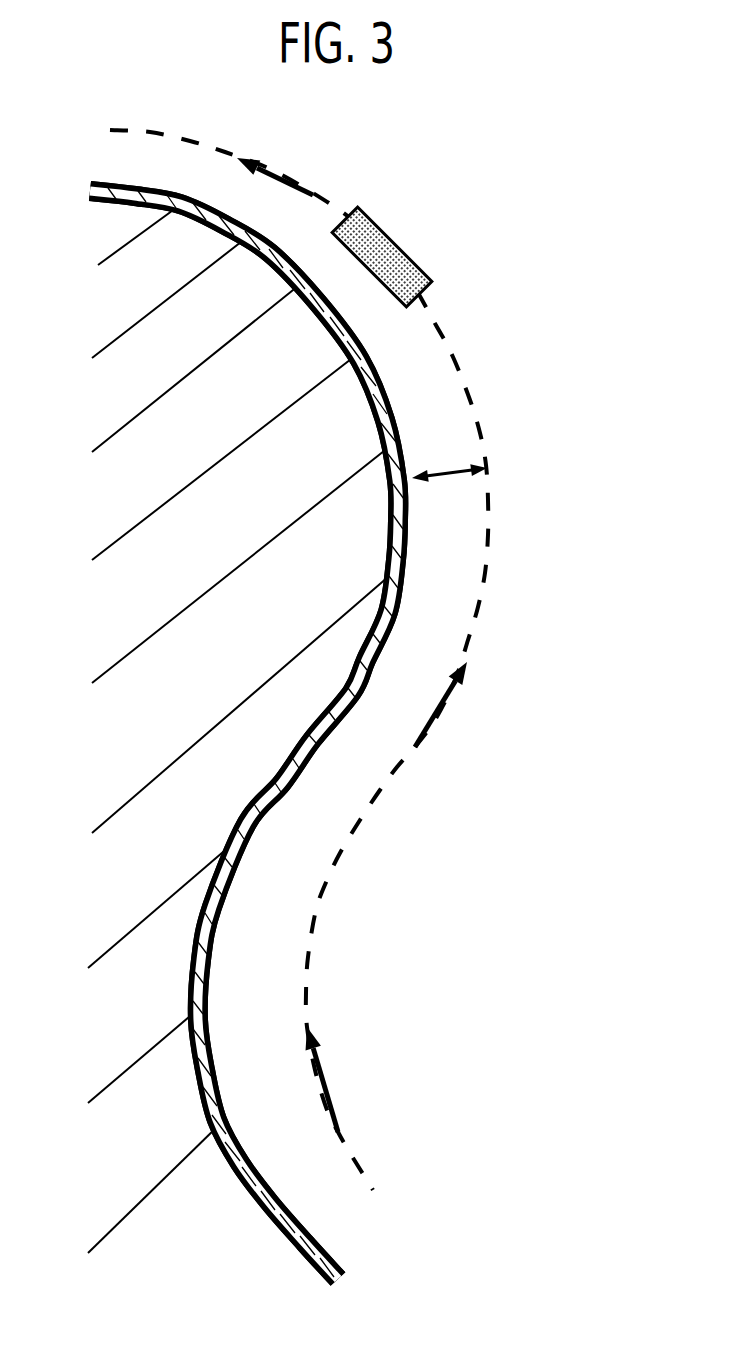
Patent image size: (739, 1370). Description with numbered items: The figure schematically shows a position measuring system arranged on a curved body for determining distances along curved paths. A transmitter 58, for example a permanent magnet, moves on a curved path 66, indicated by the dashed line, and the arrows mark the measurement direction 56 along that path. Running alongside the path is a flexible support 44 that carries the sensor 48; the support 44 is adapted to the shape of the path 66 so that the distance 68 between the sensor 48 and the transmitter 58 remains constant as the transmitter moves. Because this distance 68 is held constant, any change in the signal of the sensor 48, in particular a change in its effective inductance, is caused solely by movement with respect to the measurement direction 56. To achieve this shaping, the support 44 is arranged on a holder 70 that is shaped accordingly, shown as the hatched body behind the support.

The flexible support 44 is at (313, 1250).
The sensor 48 is at (310, 765).
The measurement direction 56 is at (305, 187).
The transmitter 58 is at (410, 258).
The curved path 66 is at (318, 905).
The distance 68 is at (445, 478).
The holder 70 is at (339, 578).